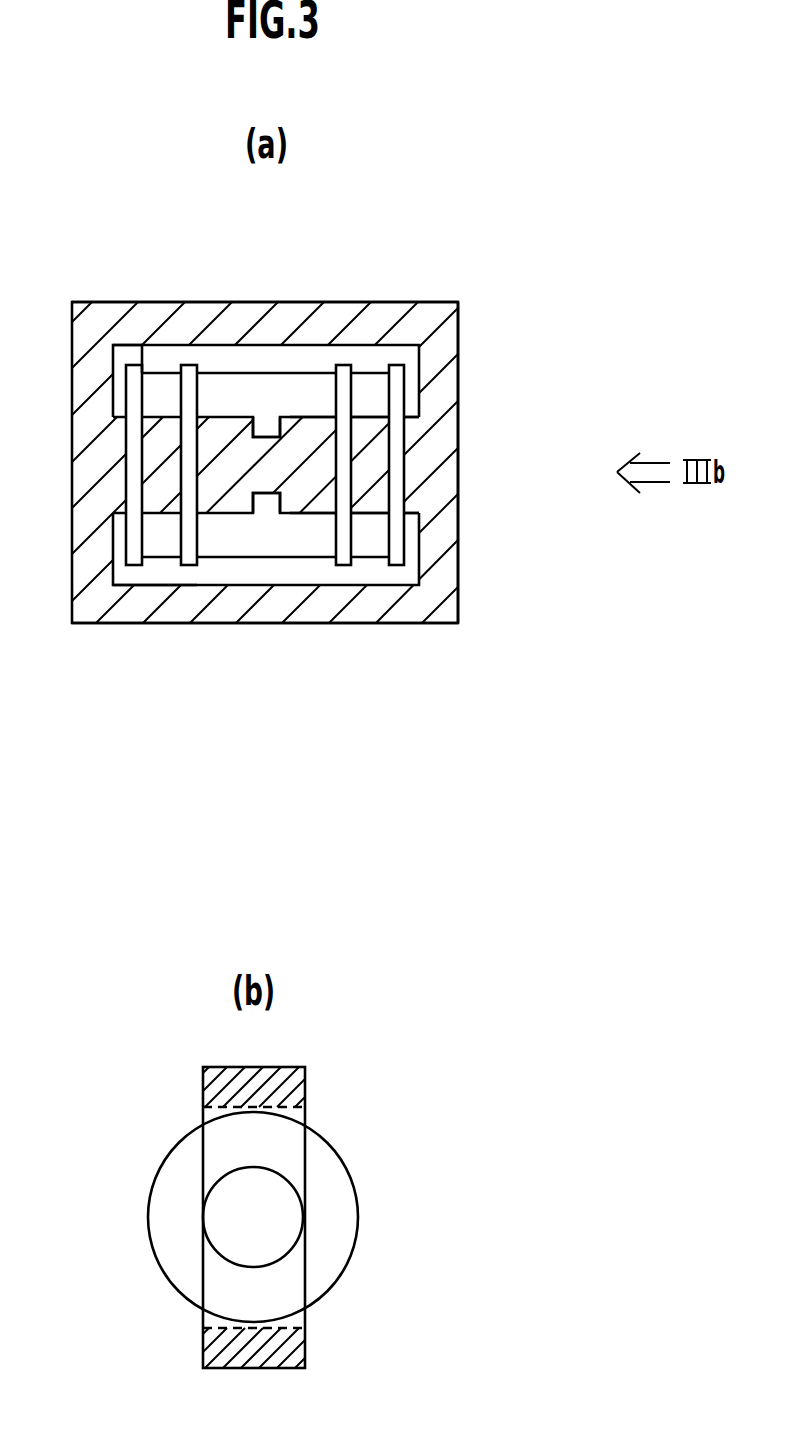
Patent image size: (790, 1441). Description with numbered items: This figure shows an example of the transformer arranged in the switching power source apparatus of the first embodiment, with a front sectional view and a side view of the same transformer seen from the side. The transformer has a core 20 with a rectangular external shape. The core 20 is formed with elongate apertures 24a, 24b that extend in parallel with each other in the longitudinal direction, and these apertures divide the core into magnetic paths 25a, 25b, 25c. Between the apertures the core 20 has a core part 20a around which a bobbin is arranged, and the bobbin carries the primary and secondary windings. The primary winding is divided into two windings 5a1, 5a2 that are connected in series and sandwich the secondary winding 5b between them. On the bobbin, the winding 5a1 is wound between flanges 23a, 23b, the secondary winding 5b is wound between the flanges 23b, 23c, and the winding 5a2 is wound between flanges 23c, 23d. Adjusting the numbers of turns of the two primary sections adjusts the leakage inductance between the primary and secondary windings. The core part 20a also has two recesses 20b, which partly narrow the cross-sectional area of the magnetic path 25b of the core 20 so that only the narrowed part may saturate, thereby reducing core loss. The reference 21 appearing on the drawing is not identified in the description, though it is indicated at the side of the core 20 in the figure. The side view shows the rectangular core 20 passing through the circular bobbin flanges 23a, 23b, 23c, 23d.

The core 20 is at (317, 300).
The core part 20a is at (310, 520).
The recesses 20b is at (265, 427).
The housing hole 21 is at (410, 483).
The flange 23a is at (118, 570).
The flange 23b is at (182, 570).
The flange 23c is at (340, 562).
The flange 23d is at (398, 562).
The elongate aperture 24a is at (132, 355).
The elongate aperture 24b is at (158, 570).
The magnetic path 25a is at (412, 320).
The magnetic path 25b is at (412, 445).
The magnetic path 25c is at (412, 602).
The winding 5a1 is at (157, 372).
The winding 5a2 is at (373, 370).
The secondary winding 5b is at (278, 558).